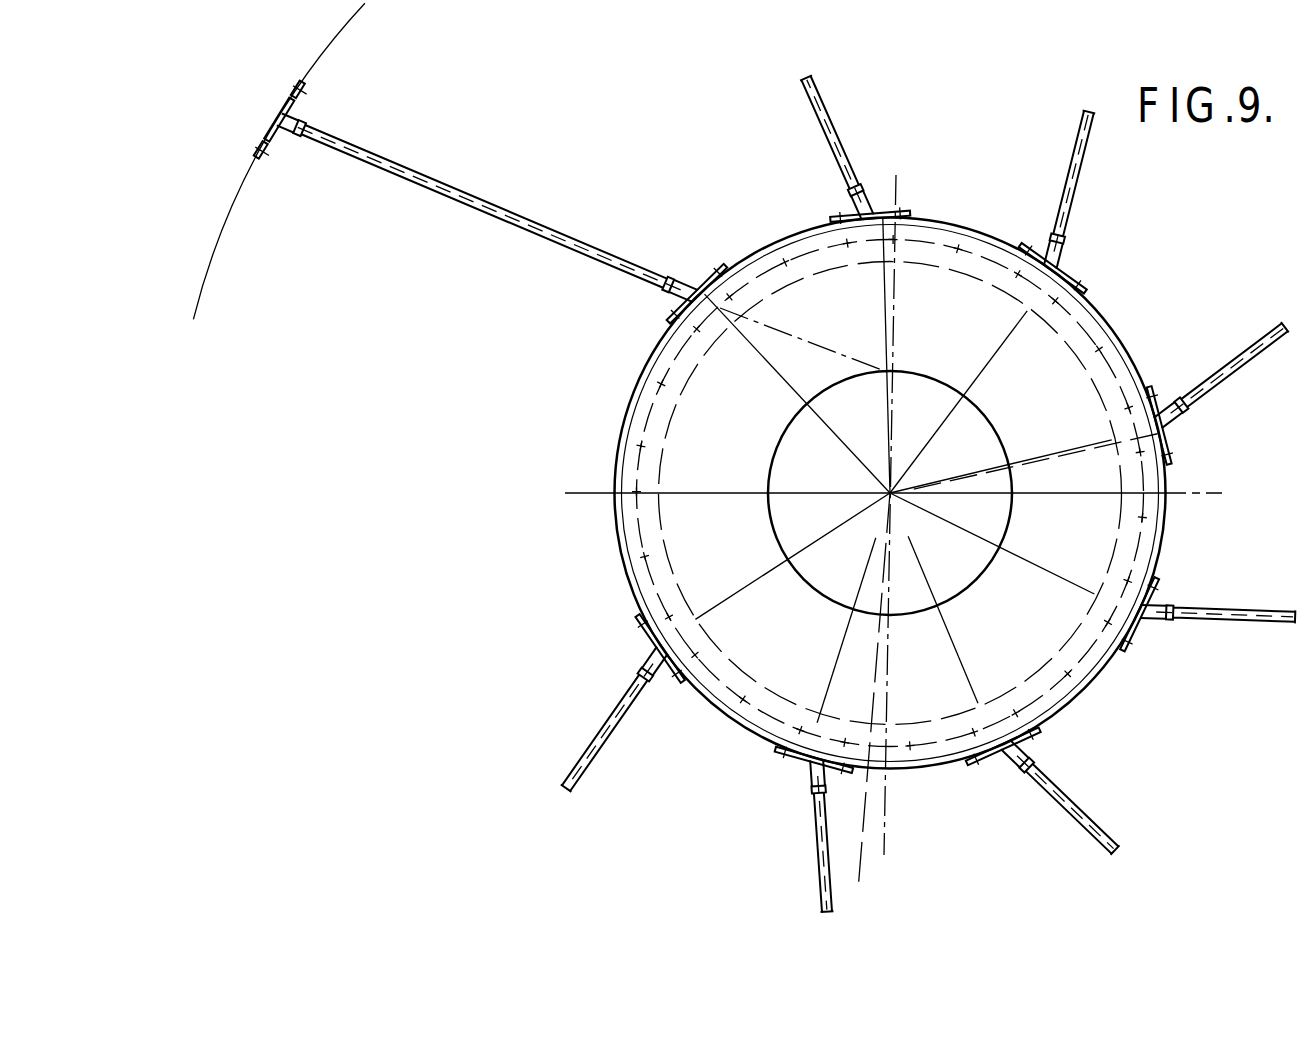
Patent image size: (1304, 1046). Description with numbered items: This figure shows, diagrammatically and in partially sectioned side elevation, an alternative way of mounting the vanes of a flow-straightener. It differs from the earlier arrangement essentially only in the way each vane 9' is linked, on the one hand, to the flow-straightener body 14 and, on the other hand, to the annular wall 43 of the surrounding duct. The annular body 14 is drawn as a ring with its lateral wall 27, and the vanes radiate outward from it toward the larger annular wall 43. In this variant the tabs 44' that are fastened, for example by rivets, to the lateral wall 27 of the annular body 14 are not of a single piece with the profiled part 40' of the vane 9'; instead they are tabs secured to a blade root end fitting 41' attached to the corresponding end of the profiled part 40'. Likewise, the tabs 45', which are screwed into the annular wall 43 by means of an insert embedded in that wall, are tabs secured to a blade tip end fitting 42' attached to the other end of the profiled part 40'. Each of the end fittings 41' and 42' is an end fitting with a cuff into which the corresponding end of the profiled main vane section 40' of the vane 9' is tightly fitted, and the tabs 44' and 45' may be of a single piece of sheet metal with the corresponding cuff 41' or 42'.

The flow-straightener body 14 is at (944, 212).
The lateral wall 27 is at (622, 412).
The vane 9' is at (487, 207).
The profiled part 40' is at (484, 206).
The blade root end fitting 41' is at (665, 244).
The blade tip end fitting 42' is at (334, 123).
The tabs 44' is at (670, 279).
The tabs 45' is at (315, 138).
The annular wall 43 is at (216, 258).